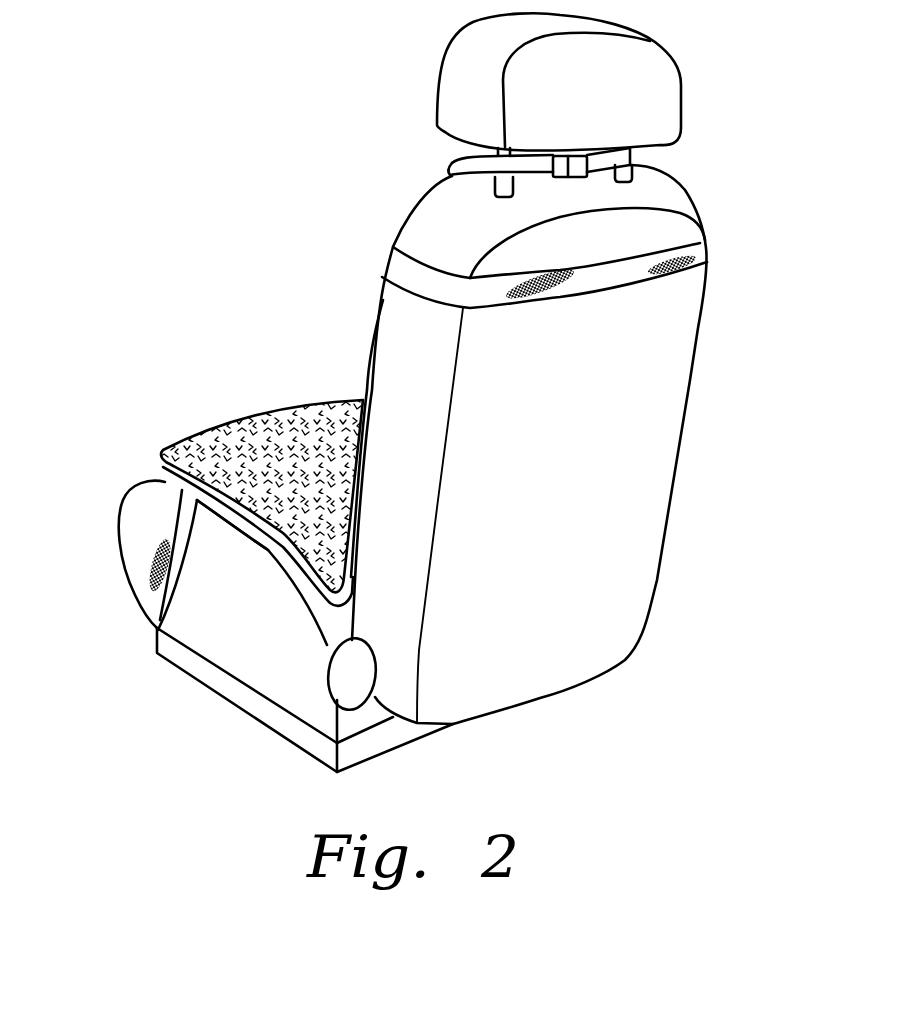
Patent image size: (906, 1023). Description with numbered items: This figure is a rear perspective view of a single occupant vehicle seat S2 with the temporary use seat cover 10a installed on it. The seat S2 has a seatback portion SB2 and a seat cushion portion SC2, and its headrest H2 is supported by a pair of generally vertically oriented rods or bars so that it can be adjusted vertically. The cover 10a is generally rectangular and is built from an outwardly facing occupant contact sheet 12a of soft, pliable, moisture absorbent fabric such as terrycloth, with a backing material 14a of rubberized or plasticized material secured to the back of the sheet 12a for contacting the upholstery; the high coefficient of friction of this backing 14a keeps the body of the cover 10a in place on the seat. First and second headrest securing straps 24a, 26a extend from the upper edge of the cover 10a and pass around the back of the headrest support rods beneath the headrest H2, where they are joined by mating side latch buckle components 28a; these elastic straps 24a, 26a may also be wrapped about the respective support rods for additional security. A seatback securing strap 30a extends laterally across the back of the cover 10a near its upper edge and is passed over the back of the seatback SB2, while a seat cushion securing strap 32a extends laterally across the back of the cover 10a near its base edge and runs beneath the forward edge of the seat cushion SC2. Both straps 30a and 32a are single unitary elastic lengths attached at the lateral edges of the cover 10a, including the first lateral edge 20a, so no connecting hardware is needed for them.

The cover 10a is at (262, 471).
The occupant contact sheet 12a is at (264, 463).
The backing material 14a is at (227, 518).
The first lateral edge 20a is at (267, 541).
The first headrest securing strap 24a is at (450, 165).
The second headrest securing strap 26a is at (632, 157).
The side latch buckle components 28a is at (572, 178).
The seatback securing strap 30a is at (583, 296).
The seat cushion securing strap 32a is at (153, 554).
The headrest H2 is at (612, 105).
The seatback portion SB2 is at (580, 457).
The seat cushion portion SC2 is at (297, 670).
The seat S2 is at (370, 392).